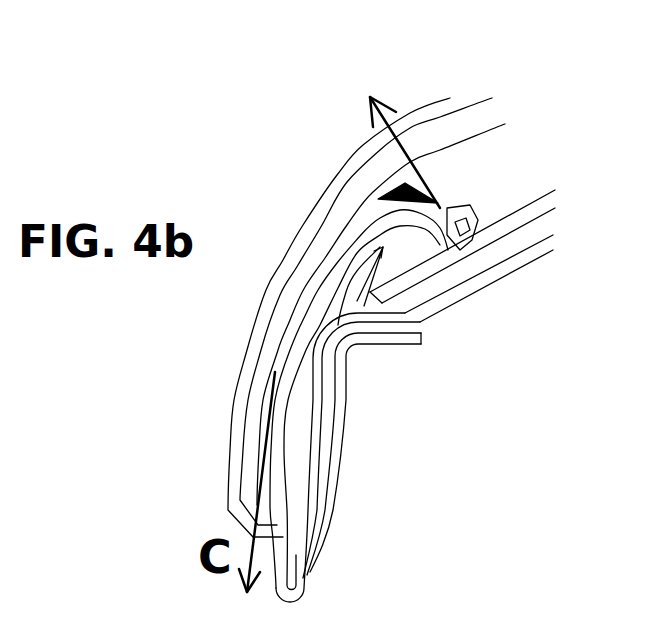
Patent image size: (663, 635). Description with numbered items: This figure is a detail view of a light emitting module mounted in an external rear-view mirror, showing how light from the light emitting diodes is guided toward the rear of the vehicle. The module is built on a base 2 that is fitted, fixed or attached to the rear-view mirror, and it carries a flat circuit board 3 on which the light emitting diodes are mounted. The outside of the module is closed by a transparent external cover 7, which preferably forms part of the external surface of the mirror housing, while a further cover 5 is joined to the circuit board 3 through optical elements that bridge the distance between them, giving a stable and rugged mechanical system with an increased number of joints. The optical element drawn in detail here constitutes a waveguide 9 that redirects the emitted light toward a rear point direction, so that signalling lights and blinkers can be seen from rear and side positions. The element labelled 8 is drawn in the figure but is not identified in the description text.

The base 2 is at (493, 270).
The circuit board 3 is at (528, 217).
The cover 5 is at (496, 101).
The external cover 7 is at (423, 108).
The clamping element 8 is at (462, 212).
The waveguide 9 is at (268, 418).